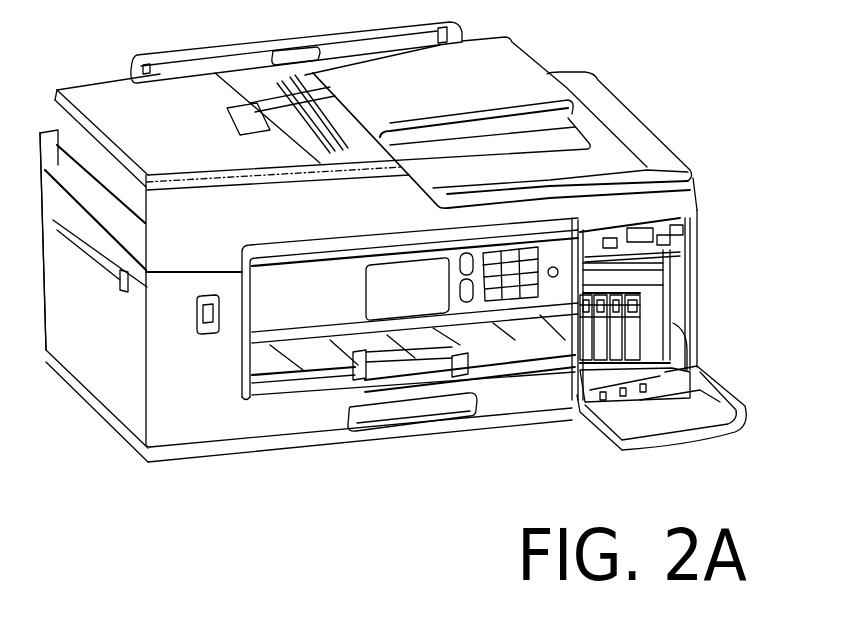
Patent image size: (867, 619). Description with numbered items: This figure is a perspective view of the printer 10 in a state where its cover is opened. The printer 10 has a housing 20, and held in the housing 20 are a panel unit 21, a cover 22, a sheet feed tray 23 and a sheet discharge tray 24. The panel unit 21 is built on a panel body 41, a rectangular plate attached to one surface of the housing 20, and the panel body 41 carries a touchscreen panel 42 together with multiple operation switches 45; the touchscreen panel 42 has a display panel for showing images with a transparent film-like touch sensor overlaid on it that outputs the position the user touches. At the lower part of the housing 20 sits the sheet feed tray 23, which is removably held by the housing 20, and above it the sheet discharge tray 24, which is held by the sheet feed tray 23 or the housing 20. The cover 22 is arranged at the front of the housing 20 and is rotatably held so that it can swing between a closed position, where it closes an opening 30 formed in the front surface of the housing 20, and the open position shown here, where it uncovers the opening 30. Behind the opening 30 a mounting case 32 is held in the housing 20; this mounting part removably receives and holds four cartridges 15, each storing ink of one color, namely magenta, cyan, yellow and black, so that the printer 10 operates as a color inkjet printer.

The printer 10 is at (368, 242).
The cartridge 15 is at (623, 380).
The housing 20 is at (92, 352).
The panel unit 21 is at (463, 400).
The cover 22 is at (647, 443).
The sheet feed tray 23 is at (277, 415).
The sheet discharge tray 24 is at (317, 400).
The opening 30 is at (667, 315).
The mounting case 32 is at (660, 370).
The panel body 41 is at (345, 380).
The touchscreen panel 42 is at (408, 288).
The operation switches 45 is at (510, 282).